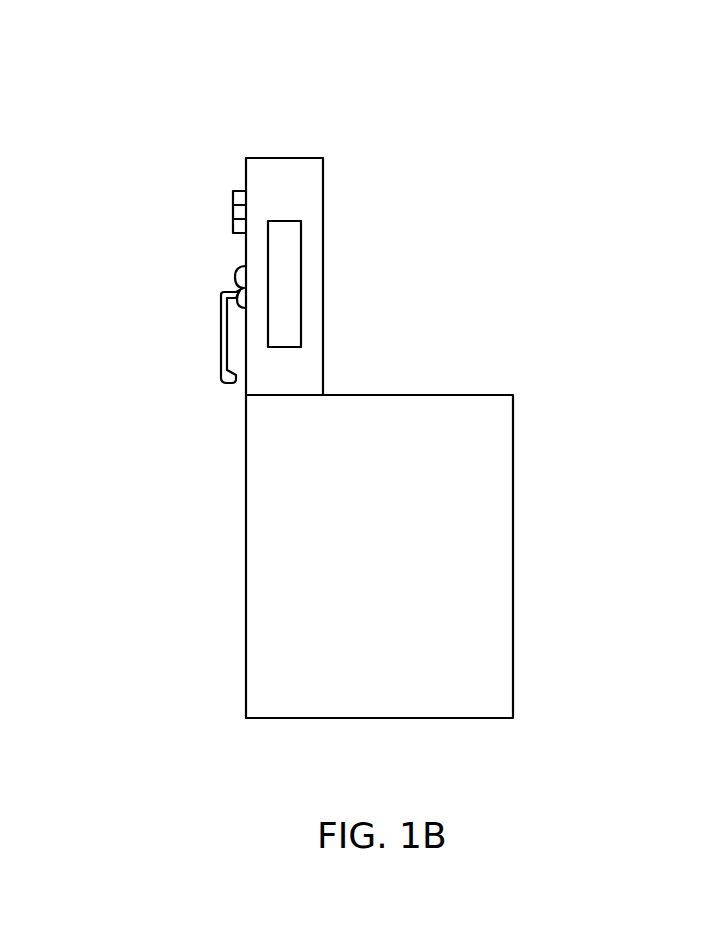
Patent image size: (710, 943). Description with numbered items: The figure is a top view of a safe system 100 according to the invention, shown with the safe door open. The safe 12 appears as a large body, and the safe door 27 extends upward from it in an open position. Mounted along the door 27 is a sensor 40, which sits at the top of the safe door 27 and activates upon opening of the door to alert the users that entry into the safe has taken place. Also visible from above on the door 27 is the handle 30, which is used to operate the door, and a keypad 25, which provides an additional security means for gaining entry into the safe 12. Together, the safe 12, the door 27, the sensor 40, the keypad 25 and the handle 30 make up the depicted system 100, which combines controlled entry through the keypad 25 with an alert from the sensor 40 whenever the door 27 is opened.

The system 100 is at (585, 162).
The safe 12 is at (492, 559).
The safe door 27 is at (283, 170).
The sensor 40 is at (290, 283).
The keypad 25 is at (232, 217).
The handle 30 is at (221, 335).